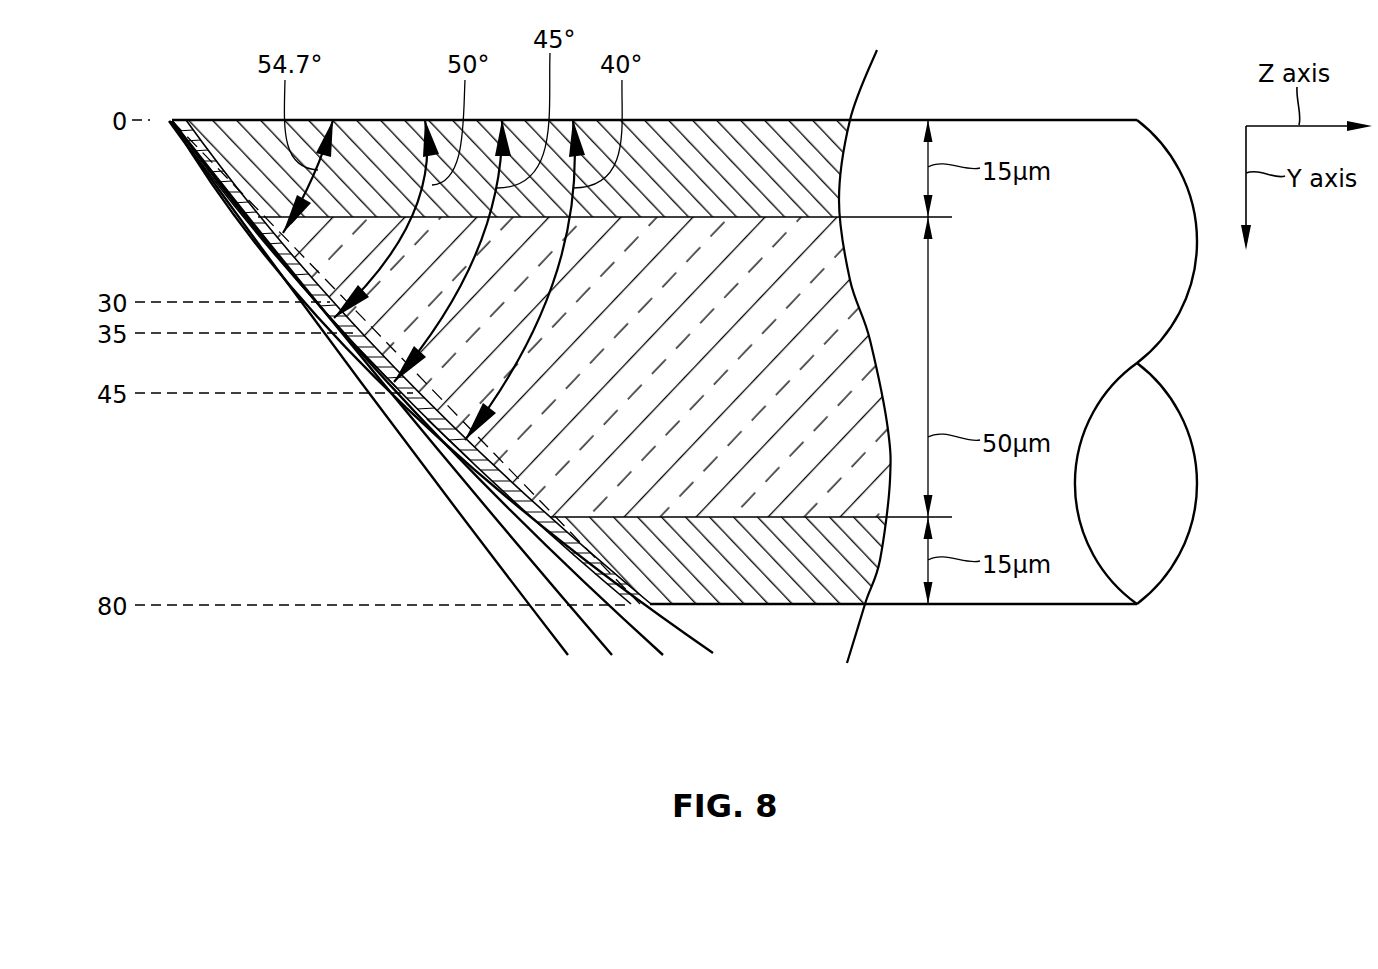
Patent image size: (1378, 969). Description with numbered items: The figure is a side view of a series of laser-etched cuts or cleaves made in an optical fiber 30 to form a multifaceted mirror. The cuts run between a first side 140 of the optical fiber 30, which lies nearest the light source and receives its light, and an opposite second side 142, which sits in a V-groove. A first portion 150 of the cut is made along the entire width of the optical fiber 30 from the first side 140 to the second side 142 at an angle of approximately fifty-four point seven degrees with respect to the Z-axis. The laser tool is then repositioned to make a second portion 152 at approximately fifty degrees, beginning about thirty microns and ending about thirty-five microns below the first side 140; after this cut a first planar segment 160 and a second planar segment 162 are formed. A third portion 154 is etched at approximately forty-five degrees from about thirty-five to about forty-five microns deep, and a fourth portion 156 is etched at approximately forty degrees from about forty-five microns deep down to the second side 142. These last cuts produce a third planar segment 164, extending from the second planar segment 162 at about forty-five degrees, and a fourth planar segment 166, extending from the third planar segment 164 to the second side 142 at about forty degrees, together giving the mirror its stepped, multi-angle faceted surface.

The optical fiber 30 is at (1073, 593).
The first side 140 is at (725, 120).
The second side 142 is at (800, 606).
The first portion of cut1 150 is at (551, 648).
The second portion of cut1 152 is at (600, 648).
The third portion of cut1 154 is at (652, 648).
The fourth portion of cut1 156 is at (702, 648).
The first planar segment 160 is at (257, 190).
The second planar segment 162 is at (333, 307).
The third planar segment 164 is at (383, 350).
The fourth planar segment 166 is at (453, 423).